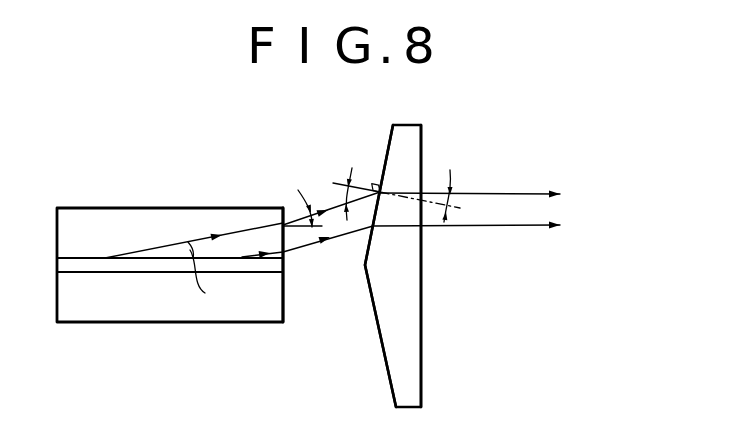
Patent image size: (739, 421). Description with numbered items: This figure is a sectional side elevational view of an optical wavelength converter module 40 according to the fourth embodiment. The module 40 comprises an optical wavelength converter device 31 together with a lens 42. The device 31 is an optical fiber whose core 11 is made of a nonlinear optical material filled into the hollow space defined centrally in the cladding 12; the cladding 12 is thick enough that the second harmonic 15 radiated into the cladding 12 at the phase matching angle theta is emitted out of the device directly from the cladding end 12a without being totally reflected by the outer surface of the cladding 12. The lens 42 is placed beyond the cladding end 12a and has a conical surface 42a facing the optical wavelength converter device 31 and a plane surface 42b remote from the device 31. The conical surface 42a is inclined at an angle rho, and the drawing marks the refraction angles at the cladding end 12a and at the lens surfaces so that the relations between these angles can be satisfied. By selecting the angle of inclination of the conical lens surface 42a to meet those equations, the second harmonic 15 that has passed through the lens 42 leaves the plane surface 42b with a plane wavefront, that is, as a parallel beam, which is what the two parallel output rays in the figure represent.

The core 11 is at (105, 265).
The cladding 12 is at (95, 212).
The cladding end 12a is at (283, 305).
The second harmonic 15 is at (300, 249).
The optical wavelength converter device 31 is at (180, 192).
The optical wavelength converter module 40 is at (330, 132).
The lens 42 is at (433, 295).
The conical surface 42a is at (380, 350).
The plane surface 42b is at (422, 383).